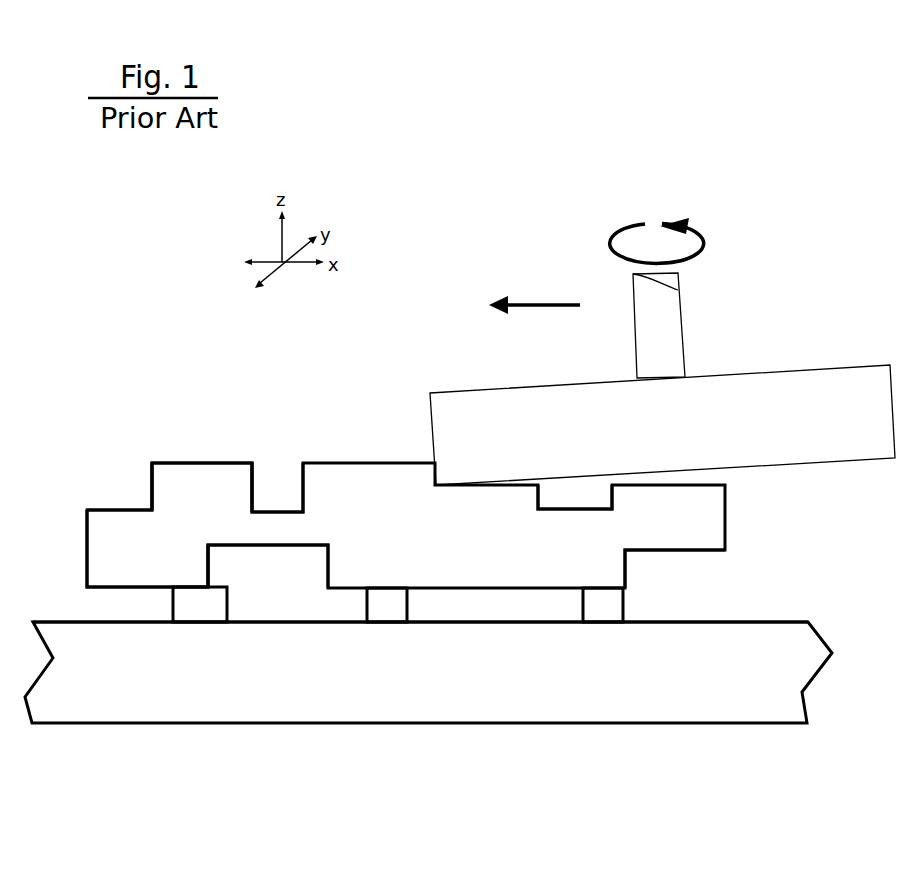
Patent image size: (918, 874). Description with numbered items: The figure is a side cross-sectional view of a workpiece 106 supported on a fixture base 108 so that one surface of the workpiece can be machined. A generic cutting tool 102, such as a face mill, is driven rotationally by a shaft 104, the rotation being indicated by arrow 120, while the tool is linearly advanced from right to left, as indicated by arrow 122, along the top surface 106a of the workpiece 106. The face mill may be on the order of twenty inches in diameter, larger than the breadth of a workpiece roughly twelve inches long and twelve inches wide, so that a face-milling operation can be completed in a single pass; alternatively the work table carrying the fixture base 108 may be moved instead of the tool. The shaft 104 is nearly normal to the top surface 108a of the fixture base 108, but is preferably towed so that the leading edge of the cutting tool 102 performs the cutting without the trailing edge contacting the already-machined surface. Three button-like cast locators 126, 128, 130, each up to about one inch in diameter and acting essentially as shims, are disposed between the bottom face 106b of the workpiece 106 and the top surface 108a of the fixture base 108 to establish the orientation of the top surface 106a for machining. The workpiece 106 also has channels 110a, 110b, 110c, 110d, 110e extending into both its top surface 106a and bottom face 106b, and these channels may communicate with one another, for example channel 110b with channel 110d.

The cutting tool 102 is at (750, 372).
The shaft 104 is at (684, 310).
The workpiece 106 is at (736, 515).
The surface of workpiece 106a is at (168, 456).
The bottom face of workpiece 106b is at (130, 595).
The fixture base 108 is at (817, 683).
The top surface of fixture base 108a is at (757, 617).
The channel 110a is at (120, 490).
The channel 110b is at (269, 456).
The channel 110c is at (580, 500).
The channel 110d is at (275, 584).
The channel 110e is at (661, 591).
The rotation arrow 120 is at (705, 243).
The linear advance arrow 122 is at (545, 303).
The button-like cast locator 126 is at (200, 610).
The button-like cast locator 128 is at (380, 607).
The button-like cast locator 130 is at (598, 612).